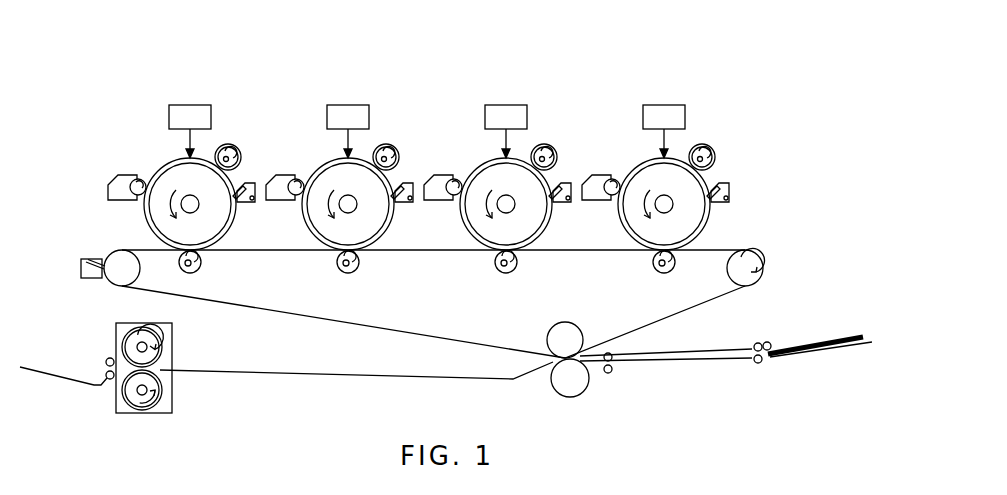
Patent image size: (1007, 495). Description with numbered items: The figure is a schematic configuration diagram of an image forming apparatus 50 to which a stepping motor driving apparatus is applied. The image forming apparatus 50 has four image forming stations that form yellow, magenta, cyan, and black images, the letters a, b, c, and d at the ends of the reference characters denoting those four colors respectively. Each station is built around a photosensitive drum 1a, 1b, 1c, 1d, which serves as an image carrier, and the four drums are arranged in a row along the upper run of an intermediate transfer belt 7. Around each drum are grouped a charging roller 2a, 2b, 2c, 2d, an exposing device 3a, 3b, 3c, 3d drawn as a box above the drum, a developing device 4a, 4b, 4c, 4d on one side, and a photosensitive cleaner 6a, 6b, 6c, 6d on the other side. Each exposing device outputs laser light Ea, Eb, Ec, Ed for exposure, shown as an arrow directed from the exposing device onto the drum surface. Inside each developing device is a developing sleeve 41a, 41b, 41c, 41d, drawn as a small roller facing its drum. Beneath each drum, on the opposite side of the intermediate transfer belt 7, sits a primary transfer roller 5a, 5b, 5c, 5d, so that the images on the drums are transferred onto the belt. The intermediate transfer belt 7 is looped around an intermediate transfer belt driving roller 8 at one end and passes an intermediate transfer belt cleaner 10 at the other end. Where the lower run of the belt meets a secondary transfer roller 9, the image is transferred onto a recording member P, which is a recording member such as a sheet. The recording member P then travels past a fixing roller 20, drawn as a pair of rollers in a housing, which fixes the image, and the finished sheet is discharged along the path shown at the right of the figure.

The image forming apparatus 50 is at (444, 64).
The photosensitive drum 1a is at (220, 238).
The photosensitive drum 1b is at (378, 238).
The photosensitive drum 1c is at (536, 238).
The photosensitive drum 1d is at (705, 228).
The charging roller 2a is at (235, 147).
The charging roller 2b is at (393, 147).
The charging roller 2c is at (551, 147).
The charging roller 2d is at (711, 147).
The exposing device 3a is at (190, 117).
The exposing device 3b is at (348, 117).
The exposing device 3c is at (506, 117).
The exposing device 3d is at (664, 117).
The laser light Ea is at (195, 150).
The laser light Eb is at (353, 150).
The laser light Ec is at (511, 150).
The laser light Ed is at (669, 150).
The developing device 4a is at (124, 175).
The developing device 4b is at (282, 175).
The developing device 4c is at (441, 175).
The developing device 4d is at (600, 175).
The developing sleeve 41a is at (143, 200).
The developing sleeve 41b is at (301, 200).
The developing sleeve 41c is at (459, 200).
The developing sleeve 41d is at (617, 200).
The primary transfer roller 5a is at (200, 268).
The primary transfer roller 5b is at (358, 268).
The primary transfer roller 5c is at (516, 268).
The primary transfer roller 5d is at (674, 268).
The photosensitive cleaner 6a is at (252, 183).
The photosensitive cleaner 6b is at (410, 183).
The photosensitive cleaner 6c is at (568, 183).
The photosensitive cleaner 6d is at (730, 186).
The intermediate transfer belt 7 is at (440, 338).
The intermediate transfer belt driving roller 8 is at (754, 252).
The secondary transfer roller 9 is at (578, 328).
The intermediate transfer belt cleaner 10 is at (87, 258).
The fixing roller 20 is at (118, 323).
The recording member P is at (838, 337).